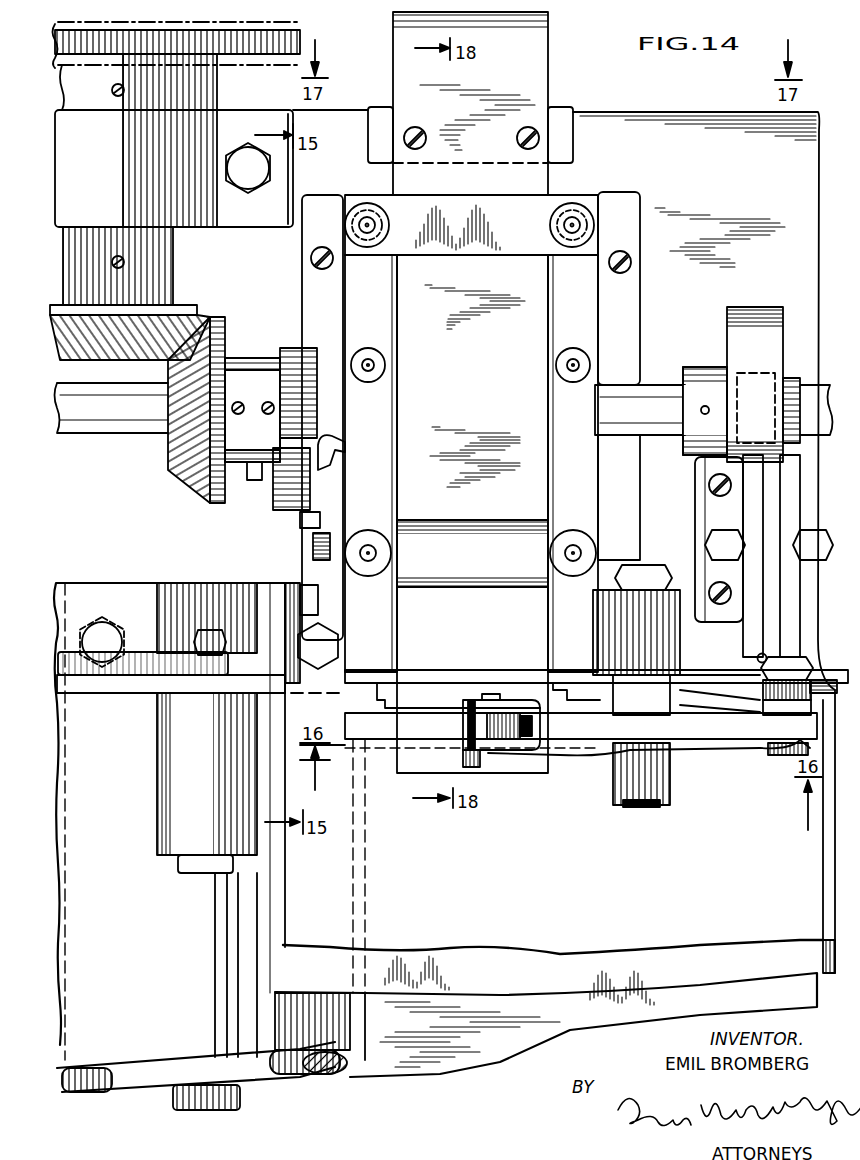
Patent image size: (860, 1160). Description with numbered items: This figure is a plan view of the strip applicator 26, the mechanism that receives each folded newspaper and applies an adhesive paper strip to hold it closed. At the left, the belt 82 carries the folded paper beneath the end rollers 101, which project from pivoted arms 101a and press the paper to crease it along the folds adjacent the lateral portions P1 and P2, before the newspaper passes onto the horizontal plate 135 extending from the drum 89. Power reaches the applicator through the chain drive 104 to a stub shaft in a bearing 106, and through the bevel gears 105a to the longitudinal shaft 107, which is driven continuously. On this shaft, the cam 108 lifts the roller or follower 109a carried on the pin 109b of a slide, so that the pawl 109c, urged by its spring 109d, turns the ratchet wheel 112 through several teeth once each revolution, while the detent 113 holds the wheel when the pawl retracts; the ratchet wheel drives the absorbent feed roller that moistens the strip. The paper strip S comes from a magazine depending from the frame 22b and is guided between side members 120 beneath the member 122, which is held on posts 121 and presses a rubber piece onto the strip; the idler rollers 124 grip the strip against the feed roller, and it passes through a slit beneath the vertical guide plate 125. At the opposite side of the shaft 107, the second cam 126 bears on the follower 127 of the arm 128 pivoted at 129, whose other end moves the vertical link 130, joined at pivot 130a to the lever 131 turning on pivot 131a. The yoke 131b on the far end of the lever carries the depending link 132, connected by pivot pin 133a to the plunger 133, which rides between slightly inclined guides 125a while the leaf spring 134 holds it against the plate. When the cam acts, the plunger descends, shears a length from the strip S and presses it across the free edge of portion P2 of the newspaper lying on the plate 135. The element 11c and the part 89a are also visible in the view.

The chain drive 104 is at (222, 78).
The bearing 106 is at (175, 250).
The bevel gears 105a is at (197, 306).
The longitudinal shaft 107 is at (100, 425).
The cam 108 is at (290, 365).
The roller or follower 109a is at (285, 478).
The pin 109b is at (245, 480).
The pawl 109c is at (302, 525).
The spring 109d is at (340, 452).
The ratchet wheel 112 is at (312, 555).
The detent 113 is at (340, 605).
The paper strip S is at (540, 65).
The member 122 is at (530, 205).
The posts 121 is at (365, 222).
The side members 120 is at (350, 300).
The plate 11c is at (600, 513).
The idler rollers 124 is at (478, 575).
The second cam 126 is at (767, 307).
The roller or follower 127 is at (752, 372).
The pivot 129 is at (790, 585).
The arm 128 is at (785, 650).
The vertical link 130 is at (760, 700).
The pivot 130a is at (790, 760).
The pivot 131a is at (645, 810).
The lever 131 is at (713, 730).
The yoke 131b is at (505, 745).
The vertical guide plate 125 is at (415, 670).
The guides 125a is at (555, 695).
The plunger 133 is at (447, 695).
The depending link 132 is at (490, 720).
The pivot pin 133a is at (465, 752).
The leaf spring 134 is at (570, 762).
The arms 101a is at (160, 583).
The end rollers 101 is at (160, 845).
The lateral portion P1 is at (290, 717).
The nut 89a is at (196, 1098).
The drum 89 is at (140, 1083).
The belt 82 is at (112, 1080).
The frame 22b is at (465, 1052).
The lateral portion P2 is at (577, 940).
The horizontal plate 135 is at (540, 980).
The strip applicator 26 is at (413, 1082).